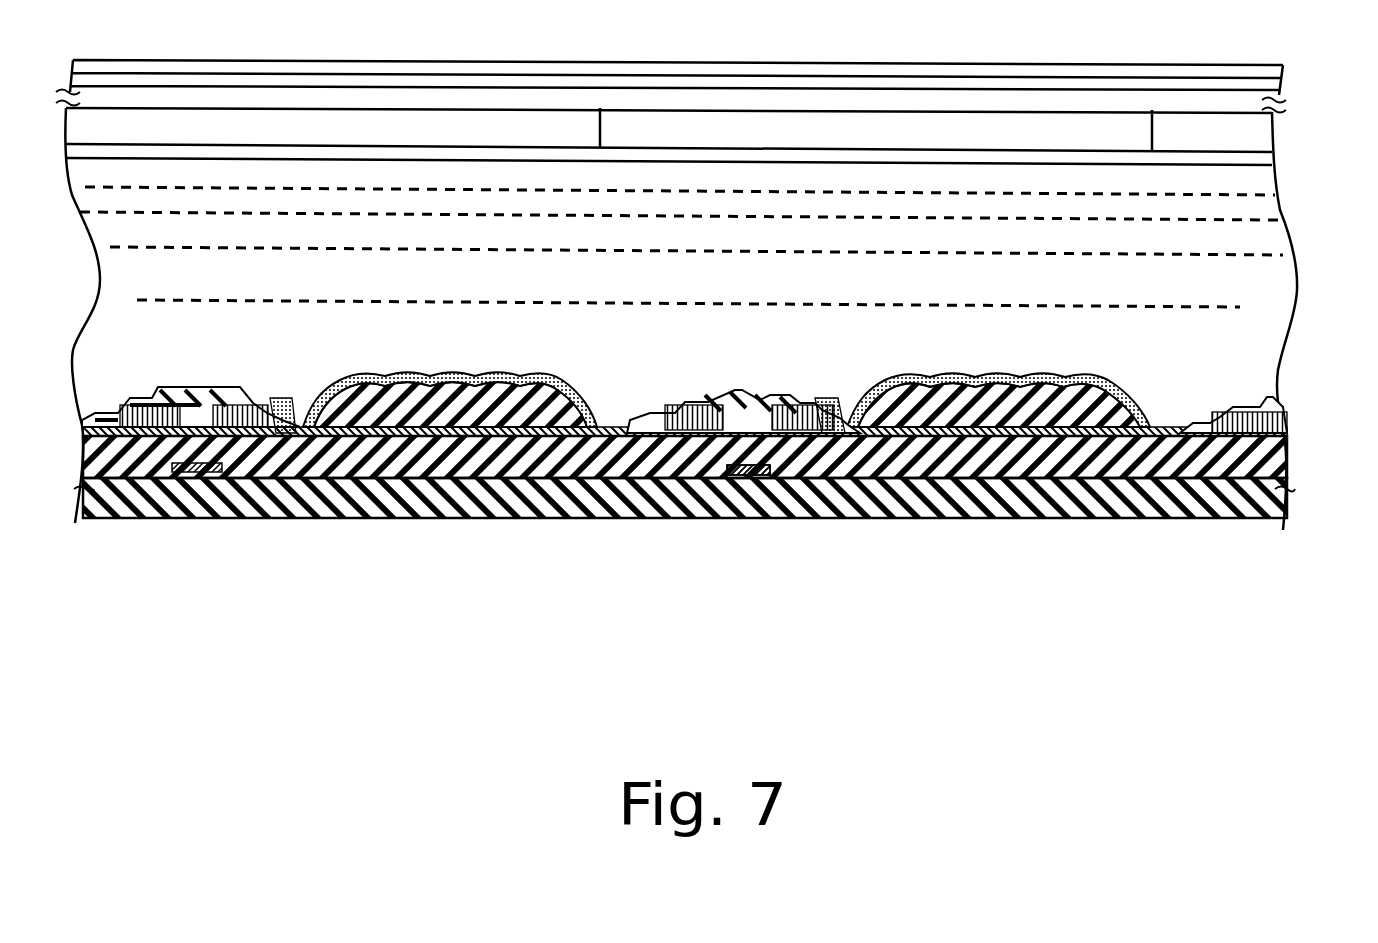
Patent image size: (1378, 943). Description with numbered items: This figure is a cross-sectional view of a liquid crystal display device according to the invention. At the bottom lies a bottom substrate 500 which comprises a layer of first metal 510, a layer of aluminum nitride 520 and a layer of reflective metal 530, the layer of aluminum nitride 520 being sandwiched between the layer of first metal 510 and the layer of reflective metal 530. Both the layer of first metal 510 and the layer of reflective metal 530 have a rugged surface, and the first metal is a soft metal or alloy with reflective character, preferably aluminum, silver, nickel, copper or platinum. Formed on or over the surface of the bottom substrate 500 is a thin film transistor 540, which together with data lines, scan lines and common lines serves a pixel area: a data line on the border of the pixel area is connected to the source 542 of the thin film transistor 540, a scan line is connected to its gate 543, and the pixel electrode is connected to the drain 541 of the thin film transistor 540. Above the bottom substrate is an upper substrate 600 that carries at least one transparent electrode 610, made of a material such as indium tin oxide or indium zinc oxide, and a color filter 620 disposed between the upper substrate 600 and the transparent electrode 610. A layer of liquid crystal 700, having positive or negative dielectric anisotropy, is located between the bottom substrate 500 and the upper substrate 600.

The bottom substrate 500 is at (1222, 505).
The layer of first metal 510 is at (1147, 420).
The layer of aluminum nitride 520 is at (1125, 413).
The layer of reflective metal 530 is at (1107, 380).
The thin film transistor 540 is at (739, 533).
The drain 541 is at (833, 440).
The source 542 is at (658, 440).
The gate 543 is at (744, 532).
The upper substrate 600 is at (1240, 100).
The transparent electrode 610 is at (1263, 160).
The color filter 620 is at (1258, 134).
The layer of liquid crystal 700 is at (1240, 235).